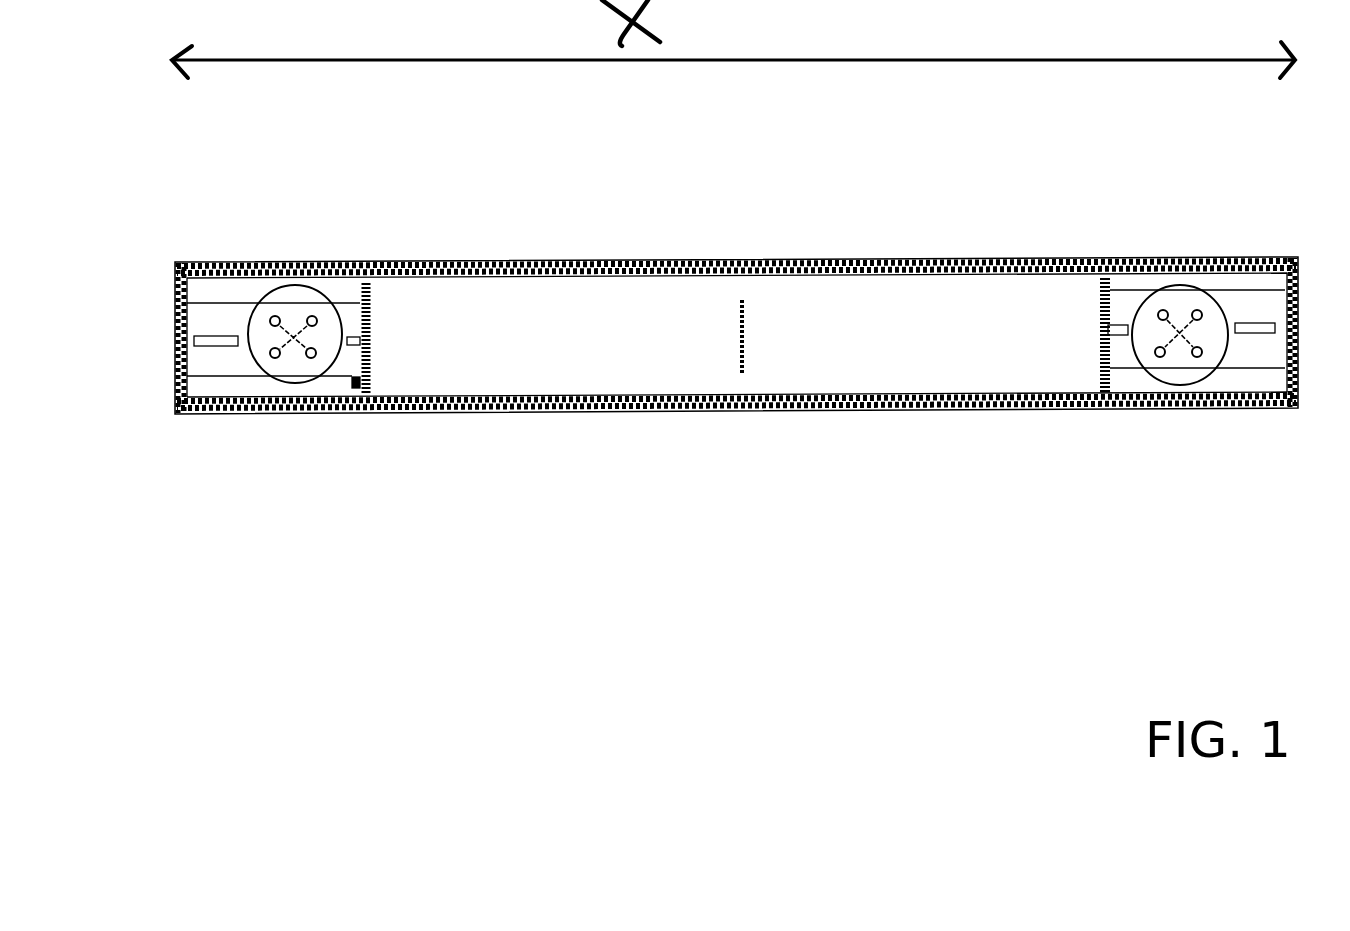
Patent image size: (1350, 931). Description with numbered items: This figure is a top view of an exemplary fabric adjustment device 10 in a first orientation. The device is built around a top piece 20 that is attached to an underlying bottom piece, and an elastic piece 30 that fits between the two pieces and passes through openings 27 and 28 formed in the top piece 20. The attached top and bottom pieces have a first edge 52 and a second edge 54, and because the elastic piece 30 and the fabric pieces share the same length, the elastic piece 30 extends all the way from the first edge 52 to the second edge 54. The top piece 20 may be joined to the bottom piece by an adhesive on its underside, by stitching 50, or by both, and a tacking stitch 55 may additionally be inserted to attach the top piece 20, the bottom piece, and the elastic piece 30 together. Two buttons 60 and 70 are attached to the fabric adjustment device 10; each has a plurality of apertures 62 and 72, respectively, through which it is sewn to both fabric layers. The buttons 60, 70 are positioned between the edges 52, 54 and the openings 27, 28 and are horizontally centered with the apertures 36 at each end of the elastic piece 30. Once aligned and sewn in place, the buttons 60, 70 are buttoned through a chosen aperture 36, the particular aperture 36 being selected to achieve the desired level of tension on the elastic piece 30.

The fabric adjustment device 10 is at (218, 664).
The top piece 20 is at (505, 311).
The opening 27 is at (374, 351).
The opening 28 is at (1094, 353).
The elastic piece 30 is at (210, 321).
The aperture 36 is at (1255, 334).
The stitching 50 is at (1073, 257).
The first edge 52 is at (173, 391).
The second edge 54 is at (1299, 381).
The tacking stitch 55 is at (752, 348).
The button 60 is at (291, 307).
The apertures 62 is at (307, 359).
The button 70 is at (1178, 310).
The apertures 72 is at (1196, 358).